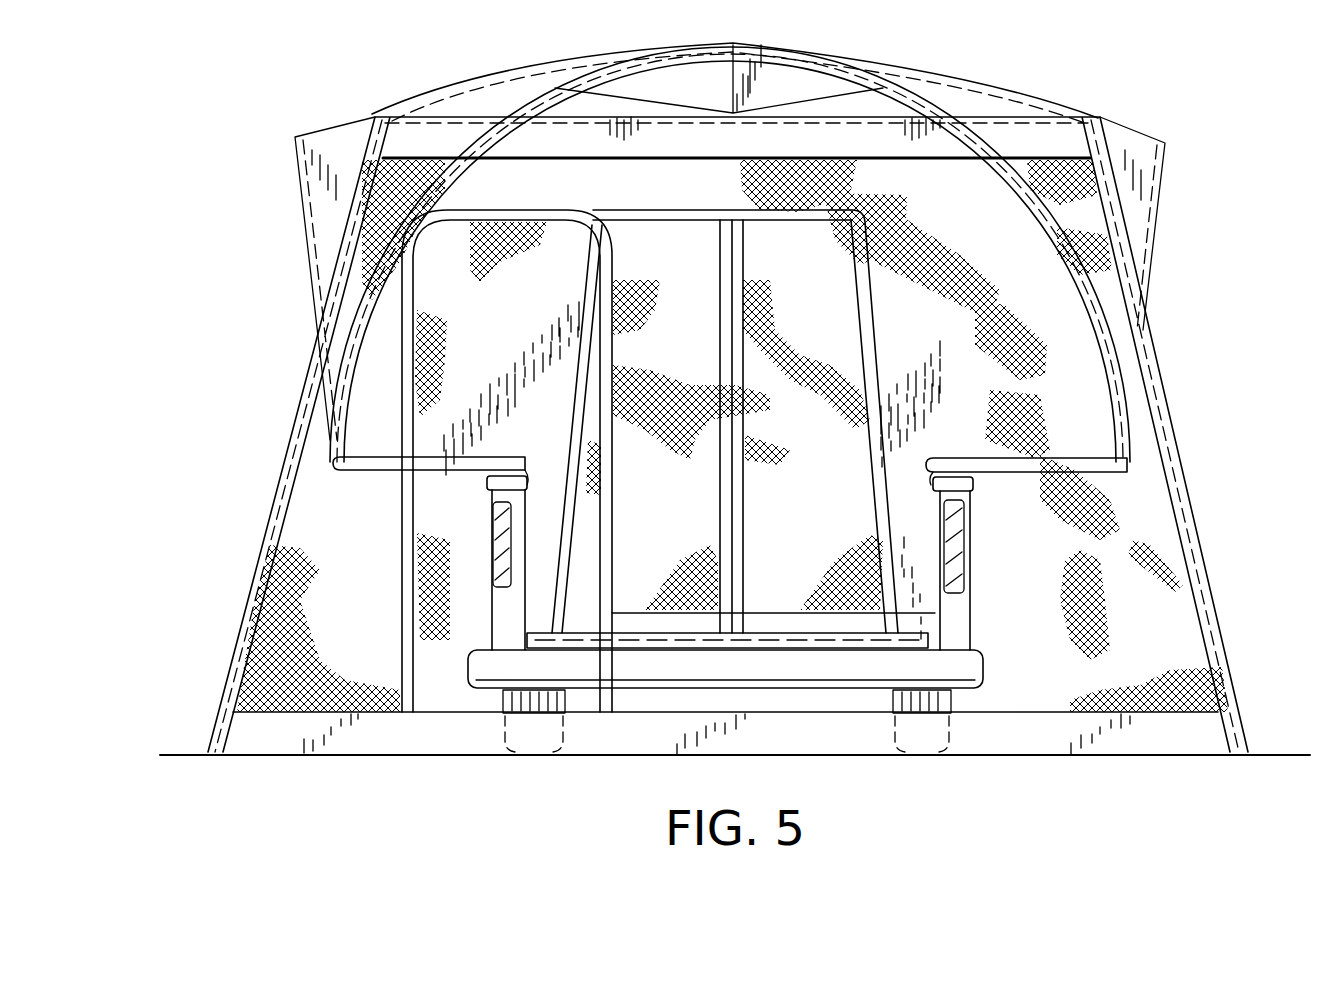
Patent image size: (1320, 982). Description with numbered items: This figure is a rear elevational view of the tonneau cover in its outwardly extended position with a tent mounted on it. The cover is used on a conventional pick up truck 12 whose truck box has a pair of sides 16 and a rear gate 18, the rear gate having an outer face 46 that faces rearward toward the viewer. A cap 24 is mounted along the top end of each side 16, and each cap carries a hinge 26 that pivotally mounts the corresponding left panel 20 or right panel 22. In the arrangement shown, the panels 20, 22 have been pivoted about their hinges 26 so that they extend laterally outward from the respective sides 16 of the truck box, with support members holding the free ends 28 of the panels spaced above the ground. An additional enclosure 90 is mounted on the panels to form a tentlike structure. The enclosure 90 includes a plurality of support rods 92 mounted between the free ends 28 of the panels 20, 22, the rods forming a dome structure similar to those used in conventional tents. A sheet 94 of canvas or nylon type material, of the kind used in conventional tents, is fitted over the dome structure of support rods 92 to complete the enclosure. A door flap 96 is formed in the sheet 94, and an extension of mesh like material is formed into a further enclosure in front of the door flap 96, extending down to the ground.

The enclosure 90 is at (384, 78).
The support rods 92 is at (683, 48).
The sheet 94 is at (580, 97).
The door flap 96 is at (685, 537).
The pick up truck 12 is at (987, 634).
The sides 16 is at (492, 580).
The rear gate 18 is at (756, 630).
The left panel 20 is at (384, 478).
The right panel 22 is at (1108, 477).
The cap 24 is at (490, 480).
The hinge 26 is at (535, 465).
The free ends 28 is at (325, 462).
The outer face 46 is at (810, 652).